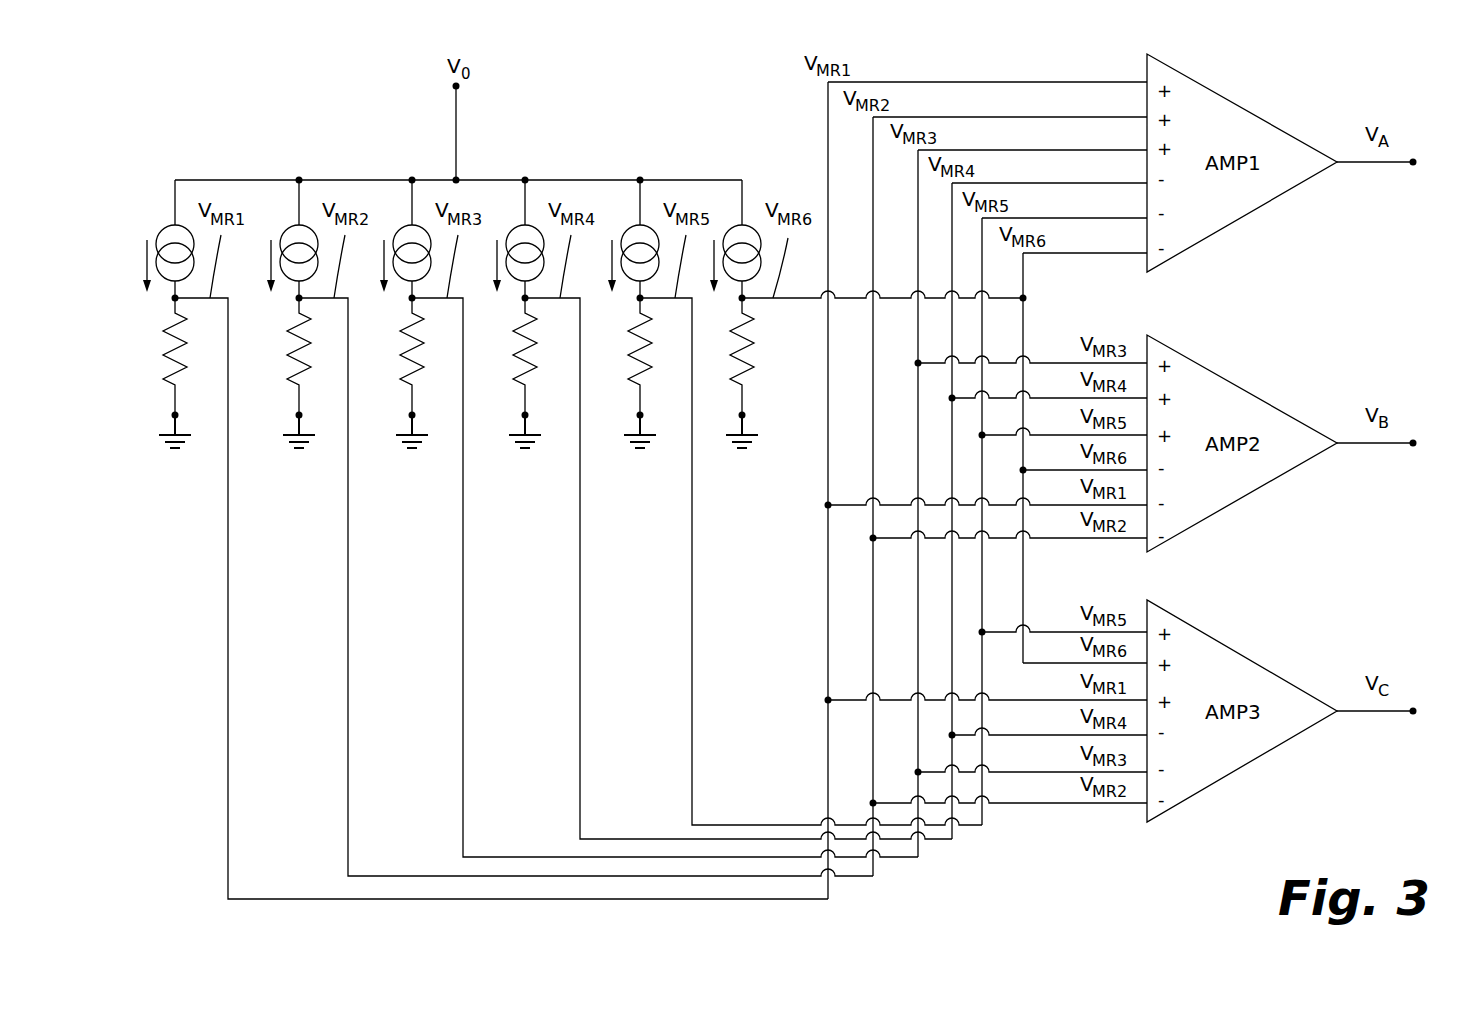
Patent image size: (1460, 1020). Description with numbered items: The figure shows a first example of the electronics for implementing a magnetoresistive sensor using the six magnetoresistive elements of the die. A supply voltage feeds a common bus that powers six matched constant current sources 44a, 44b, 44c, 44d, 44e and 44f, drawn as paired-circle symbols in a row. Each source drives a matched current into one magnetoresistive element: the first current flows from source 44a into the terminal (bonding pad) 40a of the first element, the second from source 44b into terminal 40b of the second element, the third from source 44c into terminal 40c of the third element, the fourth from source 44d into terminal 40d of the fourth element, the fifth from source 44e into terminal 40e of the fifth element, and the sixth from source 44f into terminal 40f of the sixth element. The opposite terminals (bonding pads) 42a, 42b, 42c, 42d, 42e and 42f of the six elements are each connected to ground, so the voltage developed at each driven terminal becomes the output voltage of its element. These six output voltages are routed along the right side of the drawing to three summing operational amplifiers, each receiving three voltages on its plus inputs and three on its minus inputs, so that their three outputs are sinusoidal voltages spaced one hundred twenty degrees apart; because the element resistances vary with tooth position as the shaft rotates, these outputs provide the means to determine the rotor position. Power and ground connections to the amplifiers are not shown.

The matched constant current source 44a is at (167, 228).
The matched constant current source 44b is at (292, 228).
The matched constant current source 44c is at (404, 228).
The matched constant current source 44d is at (522, 225).
The matched constant current source 44e is at (635, 225).
The matched constant current source 44f is at (744, 225).
The terminal (bonding pad) of MR1 40a is at (173, 300).
The terminal (bonding pad) of MR2 40b is at (297, 300).
The terminal (bonding pad) of MR3 40c is at (410, 300).
The terminal (bonding pad) of MR4 40d is at (523, 300).
The terminal (bonding pad) of MR5 40e is at (638, 300).
The terminal (bonding pad) of MR6 40f is at (739, 303).
The terminal (bonding pad) of MR1 42a is at (173, 418).
The terminal (bonding pad) of MR2 42b is at (297, 418).
The terminal (bonding pad) of MR3 42c is at (410, 418).
The terminal (bonding pad) of MR4 42d is at (523, 418).
The terminal (bonding pad) of MR5 42e is at (638, 418).
The terminal (bonding pad) of MR6 42f is at (745, 417).